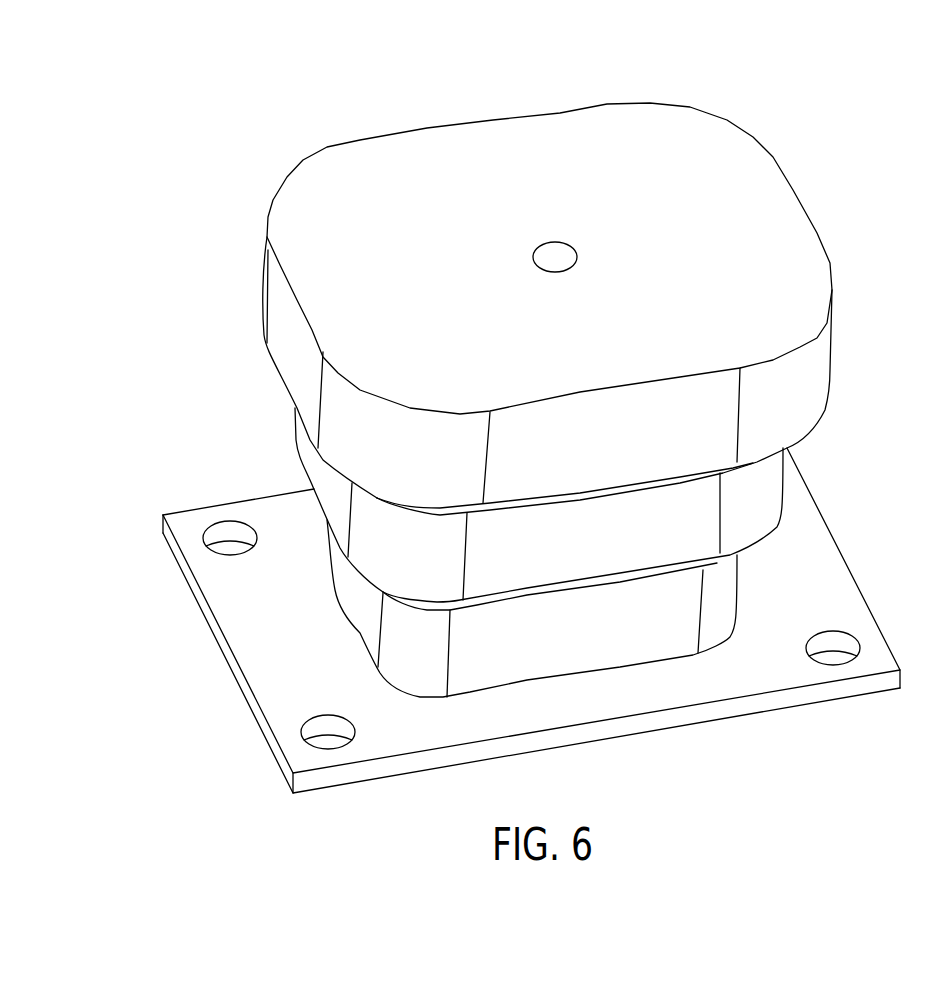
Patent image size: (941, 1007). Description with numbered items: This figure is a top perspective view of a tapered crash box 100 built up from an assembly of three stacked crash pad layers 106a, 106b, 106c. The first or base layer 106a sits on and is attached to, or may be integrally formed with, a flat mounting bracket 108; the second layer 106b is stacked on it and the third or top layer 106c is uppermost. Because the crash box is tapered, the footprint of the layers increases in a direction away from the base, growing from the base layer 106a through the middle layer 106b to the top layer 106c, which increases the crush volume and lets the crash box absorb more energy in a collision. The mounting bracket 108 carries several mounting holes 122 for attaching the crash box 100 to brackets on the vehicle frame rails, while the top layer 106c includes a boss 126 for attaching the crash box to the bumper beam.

The crash box 100 is at (742, 87).
The first crash pad layer 106a is at (353, 582).
The second crash pad layer 106b is at (332, 493).
The third crash pad layer 106c is at (287, 357).
The mounting bracket 108 is at (840, 585).
The mounting hole 122 is at (317, 727).
The boss 126 is at (568, 256).